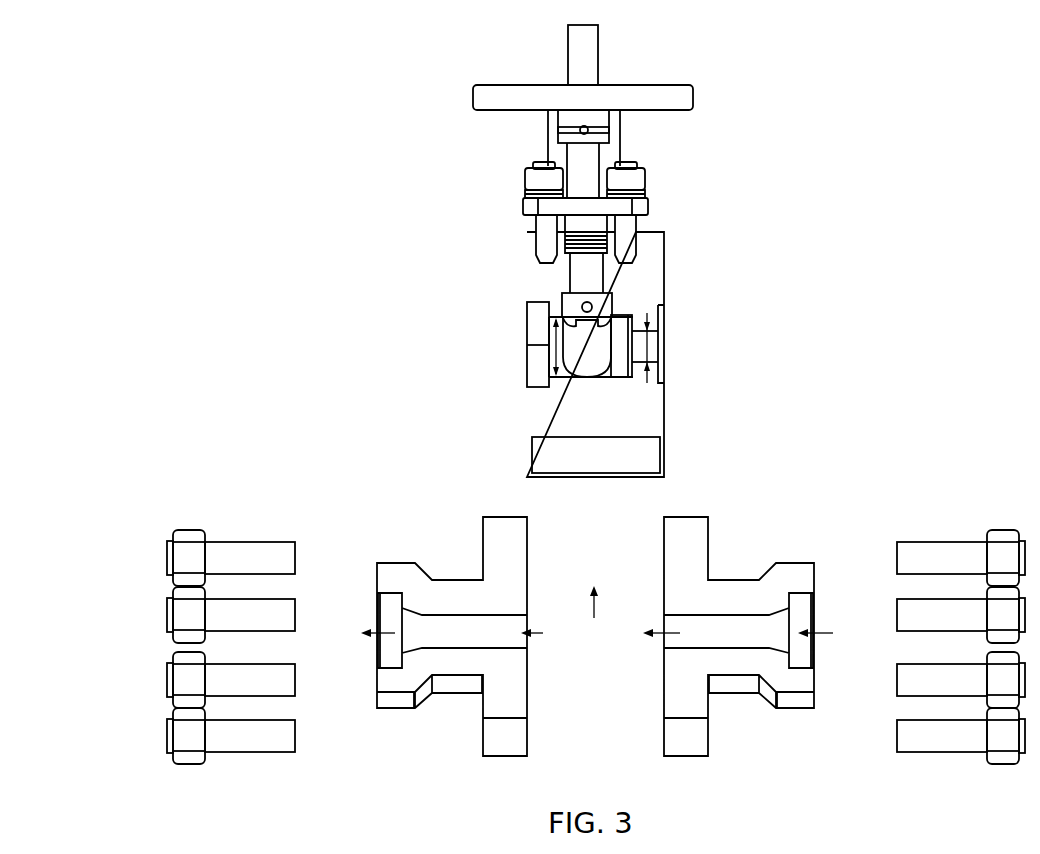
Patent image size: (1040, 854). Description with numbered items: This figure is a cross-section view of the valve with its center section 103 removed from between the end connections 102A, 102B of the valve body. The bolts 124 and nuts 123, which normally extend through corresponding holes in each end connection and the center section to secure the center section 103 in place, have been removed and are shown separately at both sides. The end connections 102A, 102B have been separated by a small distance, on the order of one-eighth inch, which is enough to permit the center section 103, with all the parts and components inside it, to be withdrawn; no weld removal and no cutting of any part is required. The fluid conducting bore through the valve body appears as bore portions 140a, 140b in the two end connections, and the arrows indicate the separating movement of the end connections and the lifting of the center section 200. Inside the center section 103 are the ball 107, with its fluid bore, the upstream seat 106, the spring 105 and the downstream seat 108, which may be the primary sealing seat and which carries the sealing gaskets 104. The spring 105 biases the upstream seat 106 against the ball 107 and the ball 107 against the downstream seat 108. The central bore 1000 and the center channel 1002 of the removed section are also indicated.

The center section 103 is at (655, 242).
The sealing gasket 104 is at (543, 338).
The spring 105 is at (645, 322).
The upstream seat 106 is at (623, 368).
The ball 107 is at (575, 362).
The downstream seat 108 is at (535, 310).
The central bore 1000 is at (527, 346).
The center channel 1002 is at (655, 347).
The nuts 123 is at (187, 533).
The bolts 124 is at (253, 547).
The fluid conducting bore 140a is at (735, 643).
The fluid conducting bore 140b is at (497, 643).
The end connection 102A is at (792, 700).
The end connection 102B is at (395, 700).
The valve assembly 200 is at (598, 641).